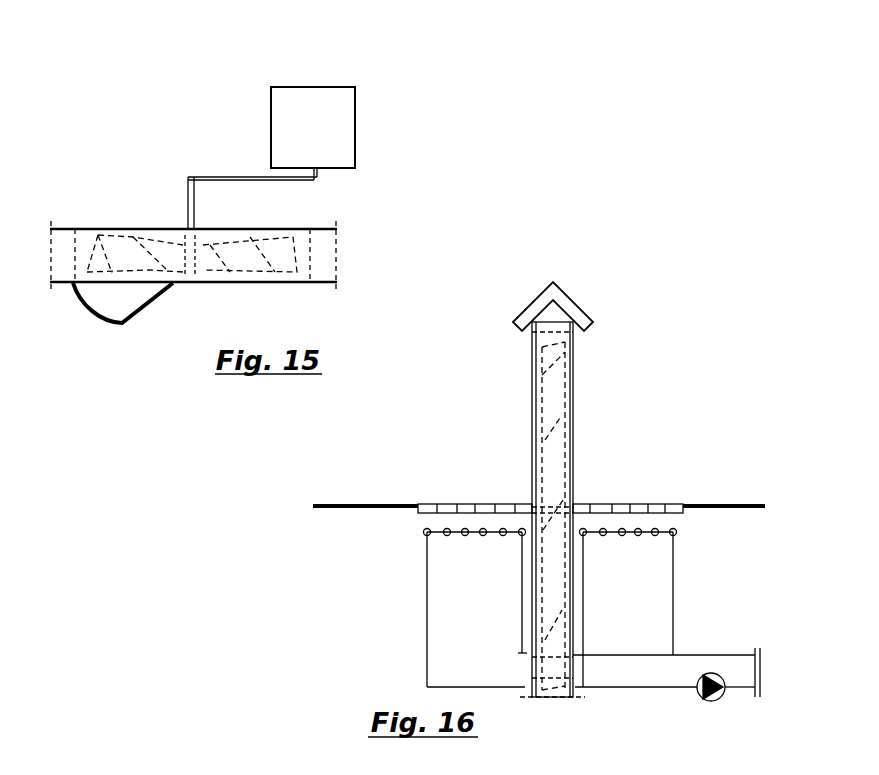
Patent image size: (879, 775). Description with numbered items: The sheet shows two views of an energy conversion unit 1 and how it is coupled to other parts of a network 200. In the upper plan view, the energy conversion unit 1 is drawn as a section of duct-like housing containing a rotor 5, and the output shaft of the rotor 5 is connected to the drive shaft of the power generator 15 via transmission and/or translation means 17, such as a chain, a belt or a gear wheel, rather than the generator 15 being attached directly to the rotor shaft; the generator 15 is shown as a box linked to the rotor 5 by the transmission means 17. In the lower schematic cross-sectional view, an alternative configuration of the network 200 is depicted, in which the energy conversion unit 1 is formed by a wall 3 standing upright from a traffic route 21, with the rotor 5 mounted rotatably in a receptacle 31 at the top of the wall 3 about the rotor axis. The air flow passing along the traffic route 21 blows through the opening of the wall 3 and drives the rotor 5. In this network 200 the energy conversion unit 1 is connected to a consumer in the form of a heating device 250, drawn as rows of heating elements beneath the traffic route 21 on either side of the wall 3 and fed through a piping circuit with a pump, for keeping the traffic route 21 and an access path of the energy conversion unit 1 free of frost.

In FIG. 15, the energy conversion unit 1 is at (118, 218).
In FIG. 16, the energy conversion unit 1 is at (513, 448).
In FIG. 15, the transmission and/or translation means 17 is at (237, 165).
In FIG. 15, the generator 15 is at (319, 139).
In FIG. 16, the receptacle 31 is at (553, 328).
In FIG. 16, the wall 3 is at (540, 377).
In FIG. 16, the rotor 5 is at (550, 388).
In FIG. 16, the traffic route 21 is at (422, 472).
In FIG. 16, the heating device 250 is at (635, 547).
In FIG. 16, the network 200 is at (666, 336).